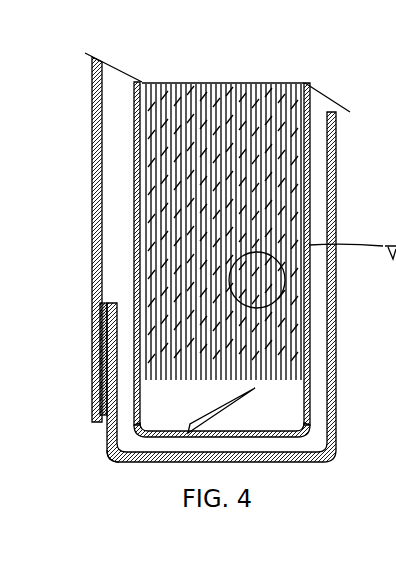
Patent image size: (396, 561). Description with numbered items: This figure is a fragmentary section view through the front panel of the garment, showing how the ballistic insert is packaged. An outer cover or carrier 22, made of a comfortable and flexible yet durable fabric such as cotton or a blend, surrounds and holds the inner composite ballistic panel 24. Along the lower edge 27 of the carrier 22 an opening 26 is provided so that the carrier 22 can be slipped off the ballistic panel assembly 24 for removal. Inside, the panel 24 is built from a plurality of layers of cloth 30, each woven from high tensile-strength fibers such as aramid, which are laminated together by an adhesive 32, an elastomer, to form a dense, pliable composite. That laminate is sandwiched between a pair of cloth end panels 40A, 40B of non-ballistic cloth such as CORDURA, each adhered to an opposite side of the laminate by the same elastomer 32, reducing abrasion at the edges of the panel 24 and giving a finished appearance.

The outer cover or carrier 22 is at (335, 342).
The inner composite ballistic panel 24 is at (211, 226).
The opening 26 is at (100, 430).
The lower edge 27 is at (122, 461).
The layers of cloth 30 is at (293, 175).
The adhesive 32 is at (278, 118).
The cloth end panel 40A is at (137, 163).
The cloth end panel 40B is at (309, 273).